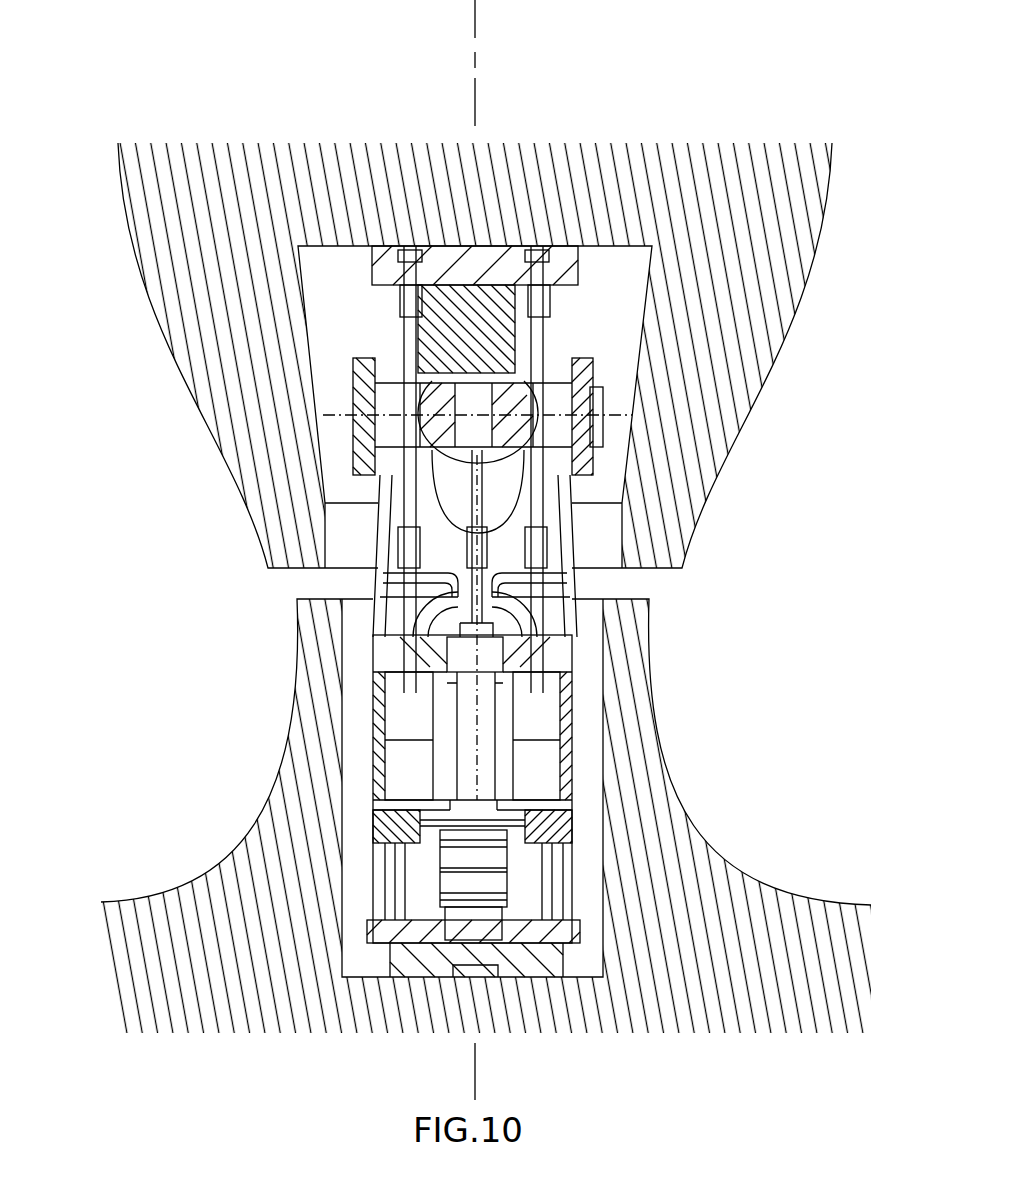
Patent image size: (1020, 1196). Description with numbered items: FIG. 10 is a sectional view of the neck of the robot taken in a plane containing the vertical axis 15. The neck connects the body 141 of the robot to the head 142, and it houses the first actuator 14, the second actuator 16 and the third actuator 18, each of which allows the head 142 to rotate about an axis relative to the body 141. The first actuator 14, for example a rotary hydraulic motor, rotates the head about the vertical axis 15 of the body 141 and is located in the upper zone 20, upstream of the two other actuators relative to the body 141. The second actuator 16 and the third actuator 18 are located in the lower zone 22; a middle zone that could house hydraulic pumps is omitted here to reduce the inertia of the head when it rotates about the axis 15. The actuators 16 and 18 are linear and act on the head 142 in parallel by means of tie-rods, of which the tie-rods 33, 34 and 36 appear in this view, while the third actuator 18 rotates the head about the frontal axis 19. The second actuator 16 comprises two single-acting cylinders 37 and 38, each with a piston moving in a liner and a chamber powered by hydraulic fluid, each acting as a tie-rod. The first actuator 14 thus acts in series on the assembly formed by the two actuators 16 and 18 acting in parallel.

The vertical axis 15 is at (475, 20).
The head 142 is at (765, 387).
The body 141 is at (730, 854).
The second actuator 16 is at (738, 582).
The third actuator 18 is at (688, 592).
The lower zone 22 is at (97, 448).
The upper zone 20 is at (97, 801).
The frontal axis 19 is at (604, 405).
The tie-rod 33 is at (400, 503).
The tie-rod 36 is at (540, 510).
The tie-rod 34 is at (478, 503).
The first actuator 14 is at (587, 915).
The cylinder 38 is at (360, 716).
The cylinder 37 is at (590, 717).